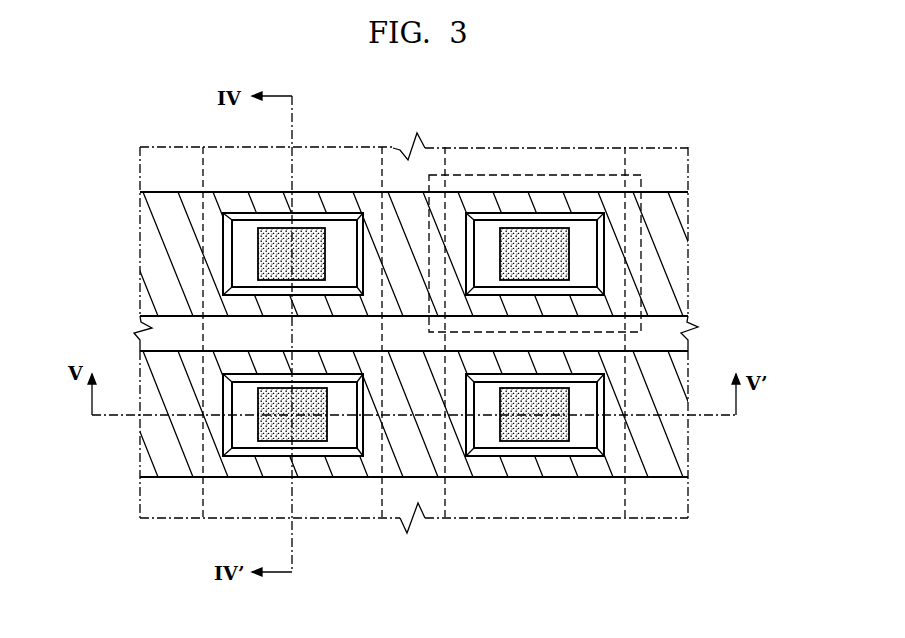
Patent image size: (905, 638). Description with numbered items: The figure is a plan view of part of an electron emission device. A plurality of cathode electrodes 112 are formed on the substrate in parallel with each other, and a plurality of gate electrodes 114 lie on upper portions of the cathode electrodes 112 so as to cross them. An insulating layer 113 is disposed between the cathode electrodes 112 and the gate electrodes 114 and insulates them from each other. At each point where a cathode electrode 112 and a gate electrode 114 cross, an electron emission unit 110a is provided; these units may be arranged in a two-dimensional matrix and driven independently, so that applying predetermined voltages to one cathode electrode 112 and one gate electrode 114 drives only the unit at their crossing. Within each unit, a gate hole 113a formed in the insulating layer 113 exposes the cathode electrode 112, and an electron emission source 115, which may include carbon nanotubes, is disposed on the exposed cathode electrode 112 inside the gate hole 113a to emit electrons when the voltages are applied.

The electron emission unit 110a is at (527, 175).
The cathode electrode 112 is at (372, 150).
The insulating layer 113 is at (158, 318).
The gate hole 113a is at (222, 240).
The gate electrode 114 is at (160, 228).
The electron emission source 115 is at (258, 257).